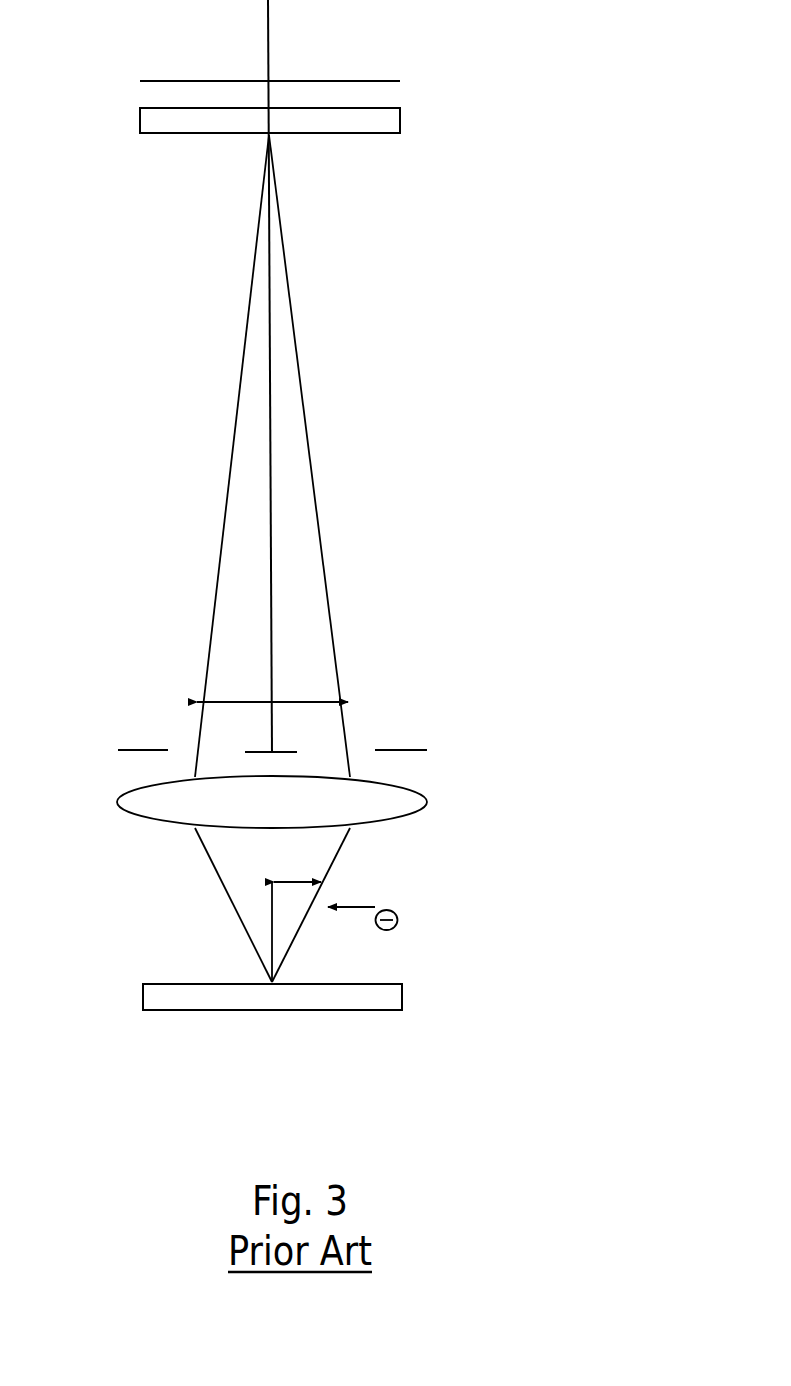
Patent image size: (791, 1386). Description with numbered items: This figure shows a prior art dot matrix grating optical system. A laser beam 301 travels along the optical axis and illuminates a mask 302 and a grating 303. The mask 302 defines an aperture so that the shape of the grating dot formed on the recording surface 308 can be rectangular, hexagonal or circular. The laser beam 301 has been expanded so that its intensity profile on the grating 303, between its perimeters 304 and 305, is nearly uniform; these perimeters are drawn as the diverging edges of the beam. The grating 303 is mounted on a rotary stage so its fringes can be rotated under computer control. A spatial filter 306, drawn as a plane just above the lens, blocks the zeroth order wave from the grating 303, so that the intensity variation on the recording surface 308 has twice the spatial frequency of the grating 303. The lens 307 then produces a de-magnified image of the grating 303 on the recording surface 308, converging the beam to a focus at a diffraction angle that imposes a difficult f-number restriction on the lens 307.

The laser beam 301 is at (270, 37).
The mask 302 is at (390, 73).
The grating 303 is at (132, 121).
The perimeter 304 is at (350, 625).
The perimeter 305 is at (193, 650).
The spatial filter 306 is at (404, 771).
The lens 307 is at (117, 802).
The recording surface 308 is at (412, 995).